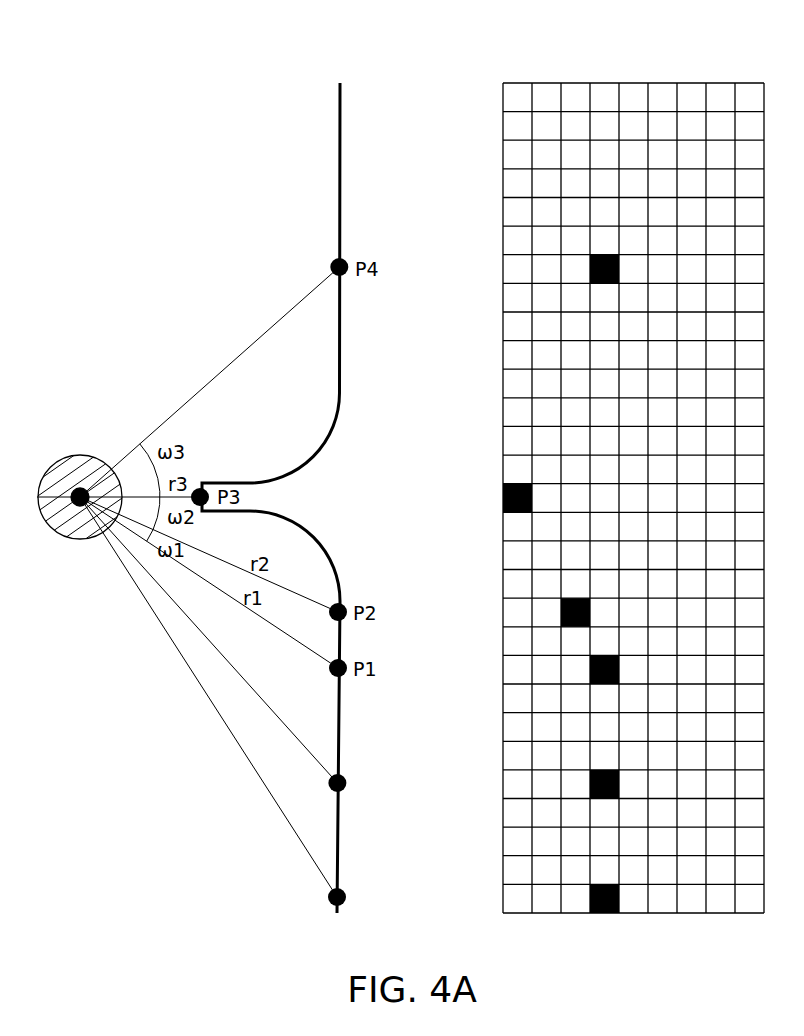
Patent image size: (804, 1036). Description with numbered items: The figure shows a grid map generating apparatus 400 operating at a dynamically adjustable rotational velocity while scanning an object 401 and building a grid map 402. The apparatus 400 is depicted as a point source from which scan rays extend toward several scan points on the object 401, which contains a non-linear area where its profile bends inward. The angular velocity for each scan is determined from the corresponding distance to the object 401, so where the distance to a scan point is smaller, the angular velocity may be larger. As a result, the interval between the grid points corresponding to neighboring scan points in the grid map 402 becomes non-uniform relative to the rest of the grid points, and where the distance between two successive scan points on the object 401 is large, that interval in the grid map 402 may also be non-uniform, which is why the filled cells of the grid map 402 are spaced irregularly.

The grid map generating apparatus 400 is at (87, 468).
The object 401 is at (338, 167).
The grid map 402 is at (632, 82).